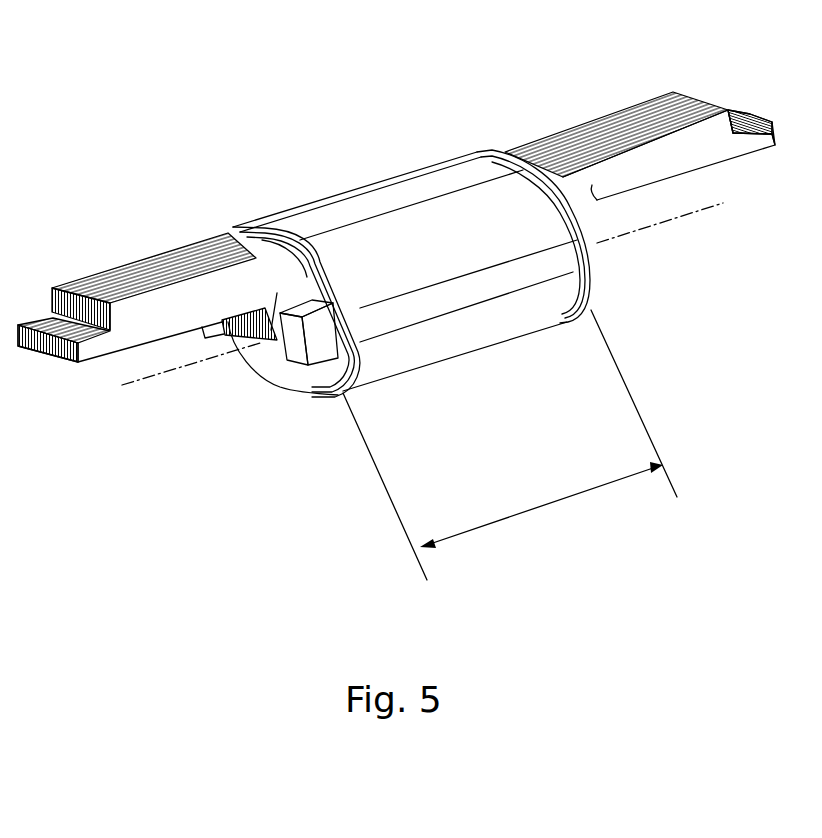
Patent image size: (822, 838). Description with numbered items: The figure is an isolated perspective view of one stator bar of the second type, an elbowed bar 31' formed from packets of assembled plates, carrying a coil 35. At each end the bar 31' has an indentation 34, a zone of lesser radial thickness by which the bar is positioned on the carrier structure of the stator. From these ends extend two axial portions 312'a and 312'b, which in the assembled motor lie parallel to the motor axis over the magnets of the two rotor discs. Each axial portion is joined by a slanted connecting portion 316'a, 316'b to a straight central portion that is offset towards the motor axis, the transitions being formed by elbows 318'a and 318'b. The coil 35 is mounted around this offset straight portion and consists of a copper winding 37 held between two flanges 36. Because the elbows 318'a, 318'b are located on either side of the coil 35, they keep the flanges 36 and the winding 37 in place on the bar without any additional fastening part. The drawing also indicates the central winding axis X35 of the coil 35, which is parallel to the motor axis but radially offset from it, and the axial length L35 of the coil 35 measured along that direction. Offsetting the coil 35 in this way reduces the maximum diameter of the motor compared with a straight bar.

The elbowed bar 31' is at (410, 295).
The first axial portion 312'a is at (137, 263).
The second axial portion 312'b is at (640, 105).
The indentation 34 is at (83, 340).
The coil 35 is at (351, 201).
The flange 36 is at (275, 367).
The copper winding 37 is at (462, 328).
The first connecting portion 316'a is at (223, 388).
The second connecting portion 316'b is at (645, 272).
The first elbow 318'a is at (299, 458).
The second elbow 318'b is at (684, 331).
The central winding axis X35 is at (432, 285).
The axial length L35 is at (510, 445).